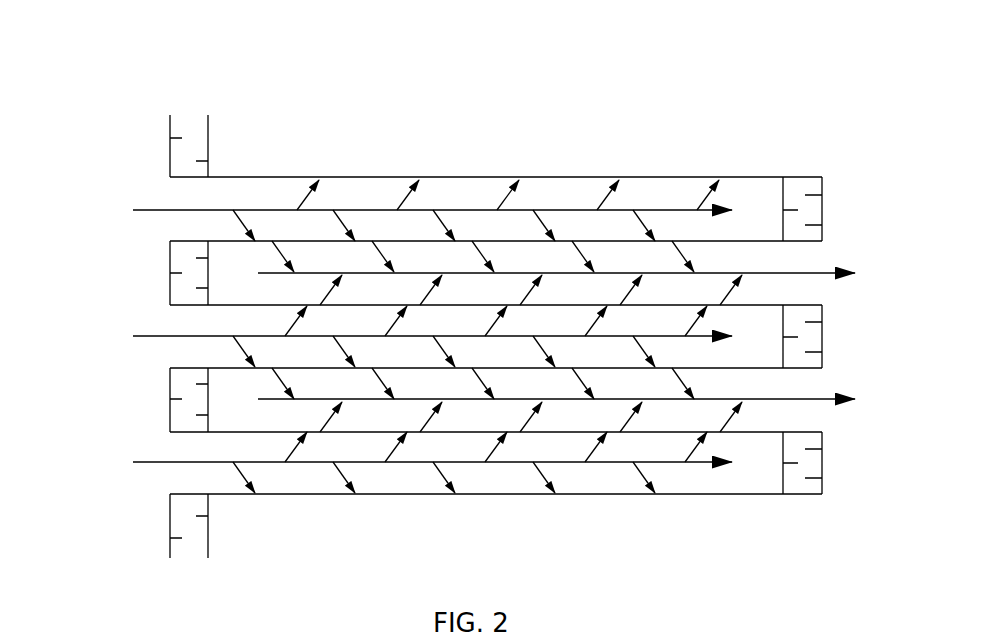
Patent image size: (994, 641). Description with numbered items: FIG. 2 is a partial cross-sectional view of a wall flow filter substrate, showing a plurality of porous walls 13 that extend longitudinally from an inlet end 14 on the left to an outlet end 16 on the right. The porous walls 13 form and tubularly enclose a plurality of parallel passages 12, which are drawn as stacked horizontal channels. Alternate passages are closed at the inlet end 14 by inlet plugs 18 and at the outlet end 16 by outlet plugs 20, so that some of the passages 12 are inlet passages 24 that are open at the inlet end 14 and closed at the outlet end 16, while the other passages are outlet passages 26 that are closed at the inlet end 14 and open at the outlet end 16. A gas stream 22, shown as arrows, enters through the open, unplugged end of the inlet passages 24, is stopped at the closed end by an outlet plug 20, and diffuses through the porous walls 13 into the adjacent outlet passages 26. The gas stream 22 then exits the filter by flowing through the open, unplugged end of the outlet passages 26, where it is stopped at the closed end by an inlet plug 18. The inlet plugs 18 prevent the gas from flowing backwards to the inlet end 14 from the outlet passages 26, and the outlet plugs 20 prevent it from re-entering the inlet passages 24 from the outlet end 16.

The passages 12 is at (232, 252).
The porous walls 13 is at (488, 242).
The inlet end 14 is at (143, 93).
The outlet end 16 is at (862, 157).
The inlet plugs 18 is at (178, 155).
The outlet plugs 20 is at (822, 210).
The gas stream 22 is at (273, 210).
The inlet passages 24 is at (195, 205).
The outlet passages 26 is at (815, 300).